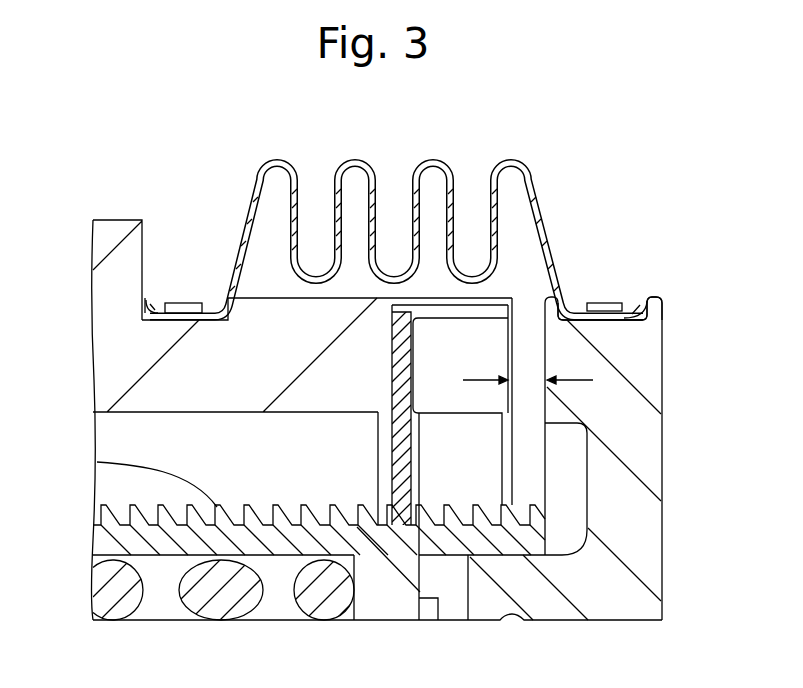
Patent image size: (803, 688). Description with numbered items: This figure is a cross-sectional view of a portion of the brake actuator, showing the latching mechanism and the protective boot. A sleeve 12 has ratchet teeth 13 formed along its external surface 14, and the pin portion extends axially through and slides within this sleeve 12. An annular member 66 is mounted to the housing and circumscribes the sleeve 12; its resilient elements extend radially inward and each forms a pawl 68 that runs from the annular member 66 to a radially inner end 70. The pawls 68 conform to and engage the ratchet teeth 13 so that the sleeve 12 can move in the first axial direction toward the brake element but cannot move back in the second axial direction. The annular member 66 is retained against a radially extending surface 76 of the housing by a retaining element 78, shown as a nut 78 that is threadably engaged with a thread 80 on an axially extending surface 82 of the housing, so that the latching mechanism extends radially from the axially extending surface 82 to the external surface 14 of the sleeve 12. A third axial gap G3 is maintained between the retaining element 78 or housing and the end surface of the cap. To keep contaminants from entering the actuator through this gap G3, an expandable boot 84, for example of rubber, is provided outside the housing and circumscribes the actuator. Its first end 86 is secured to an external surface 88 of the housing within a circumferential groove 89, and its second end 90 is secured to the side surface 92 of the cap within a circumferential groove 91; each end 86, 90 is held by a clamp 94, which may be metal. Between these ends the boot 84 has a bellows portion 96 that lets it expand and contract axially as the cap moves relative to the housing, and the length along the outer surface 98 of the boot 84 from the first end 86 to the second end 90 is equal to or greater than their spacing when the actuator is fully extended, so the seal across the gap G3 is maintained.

The sleeve 12 is at (117, 540).
The ratchet teeth 13 is at (163, 520).
The external surface 14 is at (97, 462).
The annular member 66 is at (377, 503).
The pawl 68 is at (389, 497).
The radially inner end 70 is at (397, 497).
The radially extending surface 76 is at (390, 367).
The retaining element 78 is at (540, 345).
The thread 80 is at (493, 310).
The axially extending surface 82 is at (467, 303).
The boot 84 is at (356, 160).
The first end 86 is at (148, 300).
The external surface 88 is at (178, 316).
The circumferential groove 89 is at (200, 320).
The second end 90 is at (642, 288).
The circumferential groove 91 is at (616, 323).
The side surface 92 is at (618, 321).
The clamp 94 is at (182, 303).
The bellows portion 96 is at (512, 160).
The outer surface 98 is at (432, 162).
The third axial gap G3 is at (577, 385).